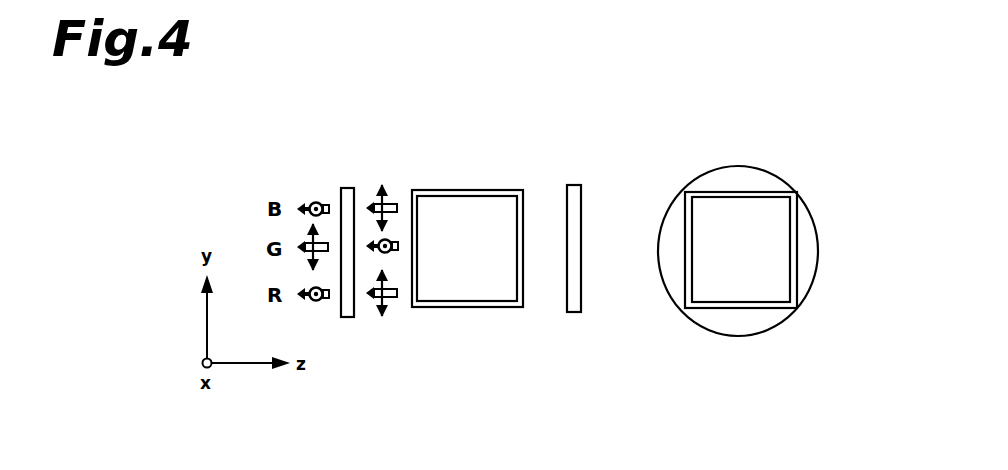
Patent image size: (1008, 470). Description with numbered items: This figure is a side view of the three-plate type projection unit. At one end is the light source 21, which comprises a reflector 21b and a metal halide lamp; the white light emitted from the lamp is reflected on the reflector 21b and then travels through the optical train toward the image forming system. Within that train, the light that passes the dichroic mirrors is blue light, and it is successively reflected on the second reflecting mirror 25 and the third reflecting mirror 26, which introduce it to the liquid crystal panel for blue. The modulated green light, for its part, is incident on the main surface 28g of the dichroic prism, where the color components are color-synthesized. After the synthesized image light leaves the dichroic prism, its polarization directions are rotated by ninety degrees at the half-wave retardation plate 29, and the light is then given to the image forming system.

The λ/2 retardation plate 29 is at (348, 192).
The third reflecting mirror 26 is at (455, 207).
The main surface of the dichroic prism 28g is at (573, 192).
The second reflecting mirror 25 is at (745, 192).
The light source 21 is at (813, 200).
The reflector 21b is at (811, 245).